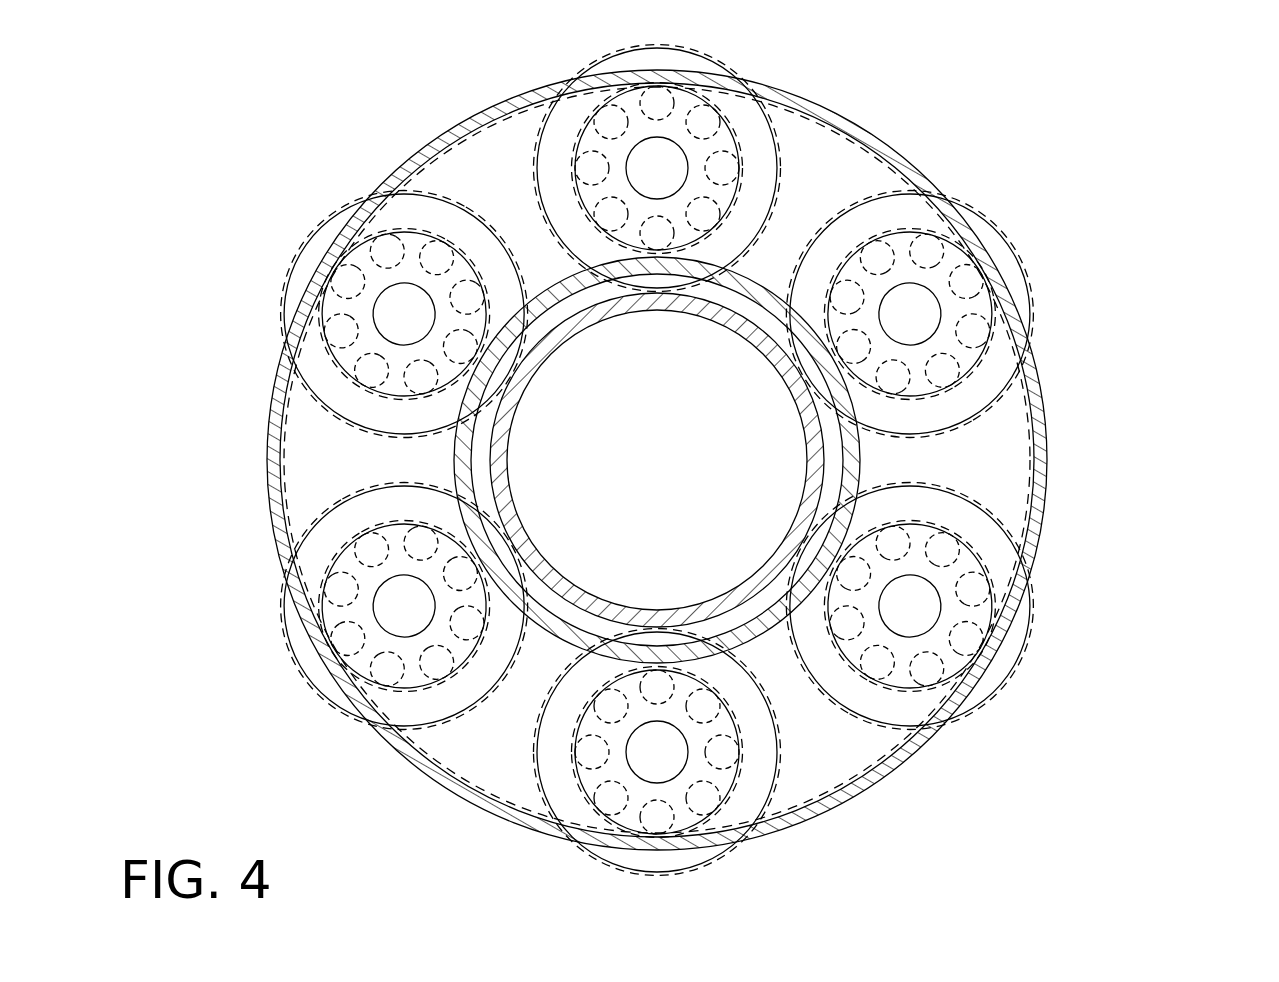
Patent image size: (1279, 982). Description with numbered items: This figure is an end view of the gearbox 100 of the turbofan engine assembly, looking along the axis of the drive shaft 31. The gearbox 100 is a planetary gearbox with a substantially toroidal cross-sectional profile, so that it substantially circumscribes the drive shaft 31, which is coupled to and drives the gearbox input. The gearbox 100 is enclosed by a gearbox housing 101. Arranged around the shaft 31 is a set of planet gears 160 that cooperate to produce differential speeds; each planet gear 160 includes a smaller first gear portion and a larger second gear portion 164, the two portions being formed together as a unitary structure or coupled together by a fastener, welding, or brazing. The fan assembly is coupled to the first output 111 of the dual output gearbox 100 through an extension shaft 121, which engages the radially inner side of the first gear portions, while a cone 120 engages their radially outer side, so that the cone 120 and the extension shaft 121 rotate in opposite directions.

The gearbox 100 is at (1137, 91).
The cone 120 is at (1037, 370).
The extension shaft 121 is at (867, 463).
The first output 111 is at (572, 632).
The shaft 31 is at (535, 556).
The planet gear 160 is at (757, 140).
The second gear portion 164 is at (753, 203).
The gearbox housing 101 is at (923, 350).